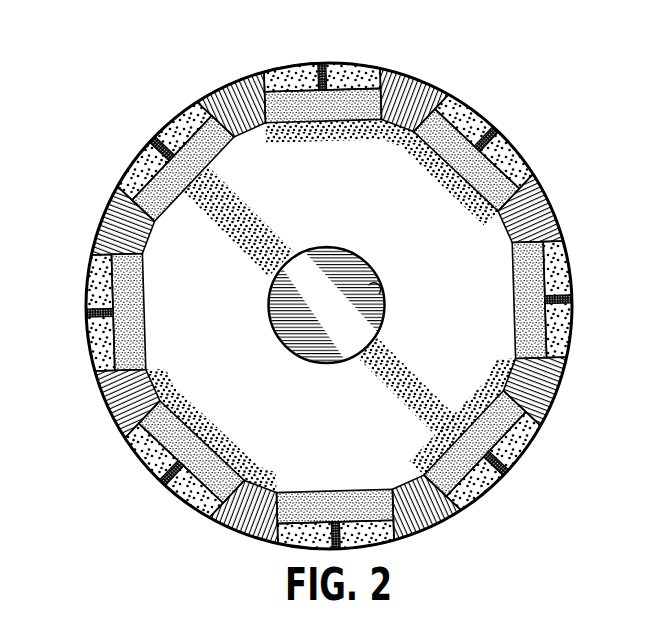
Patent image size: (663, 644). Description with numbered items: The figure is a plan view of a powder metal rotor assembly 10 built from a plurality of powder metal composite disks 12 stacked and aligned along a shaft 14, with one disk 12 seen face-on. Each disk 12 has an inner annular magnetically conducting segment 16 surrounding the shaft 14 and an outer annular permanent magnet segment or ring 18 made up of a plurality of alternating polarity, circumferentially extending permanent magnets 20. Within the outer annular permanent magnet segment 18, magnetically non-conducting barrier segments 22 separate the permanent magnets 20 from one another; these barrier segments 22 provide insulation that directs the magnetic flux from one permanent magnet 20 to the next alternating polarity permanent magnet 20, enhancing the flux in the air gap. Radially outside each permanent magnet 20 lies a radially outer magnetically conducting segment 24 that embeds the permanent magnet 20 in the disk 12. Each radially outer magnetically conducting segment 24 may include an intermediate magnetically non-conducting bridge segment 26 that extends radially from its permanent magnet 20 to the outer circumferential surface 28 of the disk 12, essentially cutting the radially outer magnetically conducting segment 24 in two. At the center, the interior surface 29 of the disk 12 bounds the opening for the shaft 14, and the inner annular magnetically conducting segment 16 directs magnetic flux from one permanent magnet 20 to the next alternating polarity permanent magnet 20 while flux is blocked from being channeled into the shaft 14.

The powder metal rotor assembly 10 is at (99, 88).
The powder metal composite disk 12 is at (523, 153).
The shaft 14 is at (323, 306).
The inner annular magnetically conducting segment 16 is at (396, 239).
The outer annular permanent magnet segment 18 is at (122, 221).
The permanent magnet 20 is at (282, 122).
The magnetically non-conducting barrier segment 22 is at (223, 87).
The radially outer magnetically conducting segment 24 is at (331, 64).
The intermediate magnetically non-conducting bridge segment 26 is at (570, 298).
The outer circumferential surface 28 is at (553, 210).
The interior surface 29 is at (383, 300).